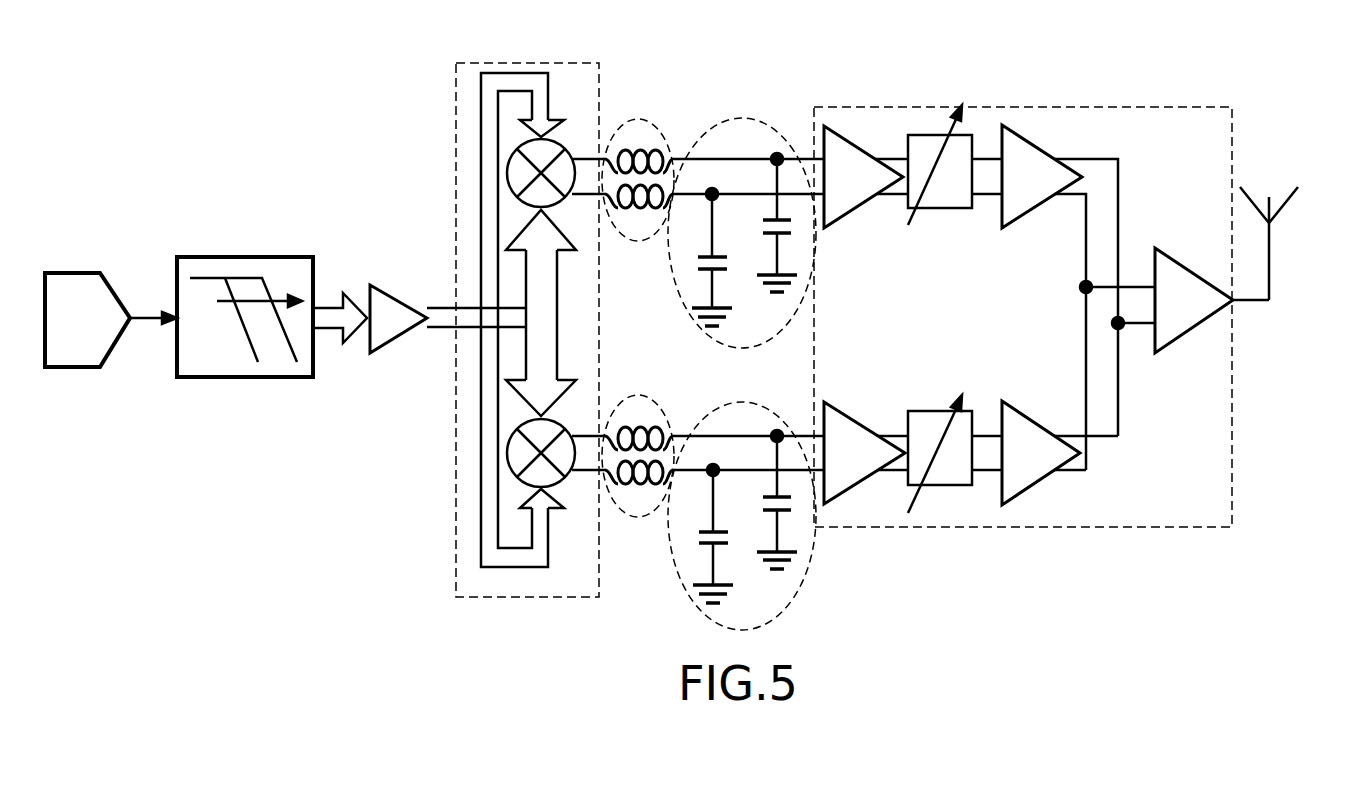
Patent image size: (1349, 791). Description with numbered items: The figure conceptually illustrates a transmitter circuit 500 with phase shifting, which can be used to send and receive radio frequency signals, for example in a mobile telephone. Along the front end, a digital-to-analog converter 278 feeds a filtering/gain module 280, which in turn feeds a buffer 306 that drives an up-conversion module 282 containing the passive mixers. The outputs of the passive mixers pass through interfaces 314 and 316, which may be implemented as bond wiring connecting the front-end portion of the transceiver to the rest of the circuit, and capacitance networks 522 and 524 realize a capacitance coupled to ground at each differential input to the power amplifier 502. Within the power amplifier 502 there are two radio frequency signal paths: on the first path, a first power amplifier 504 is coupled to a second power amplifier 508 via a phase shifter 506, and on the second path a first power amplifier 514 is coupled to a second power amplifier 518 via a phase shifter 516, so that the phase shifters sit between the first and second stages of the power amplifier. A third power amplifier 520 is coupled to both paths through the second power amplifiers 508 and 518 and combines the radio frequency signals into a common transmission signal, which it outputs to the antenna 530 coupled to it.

The transmitter circuit 500 is at (948, 37).
The digital-to-analog converter 278 is at (130, 305).
The filtering/gain module 280 is at (296, 257).
The buffer 306 is at (403, 301).
The up-conversion module 282 is at (600, 105).
The interface 314 is at (665, 140).
The interface 316 is at (655, 400).
The capacitance network 522 is at (755, 118).
The capacitance network 524 is at (762, 402).
The power amplifier 502 is at (1068, 107).
The first power amplifier 504 is at (850, 215).
The phase shifter 506 is at (948, 208).
The second power amplifier 508 is at (1030, 212).
The first power amplifier 514 is at (856, 422).
The phase shifter 516 is at (933, 411).
The second power amplifier 518 is at (1030, 420).
The third power amplifier 520 is at (1180, 338).
The antenna 530 is at (1269, 262).